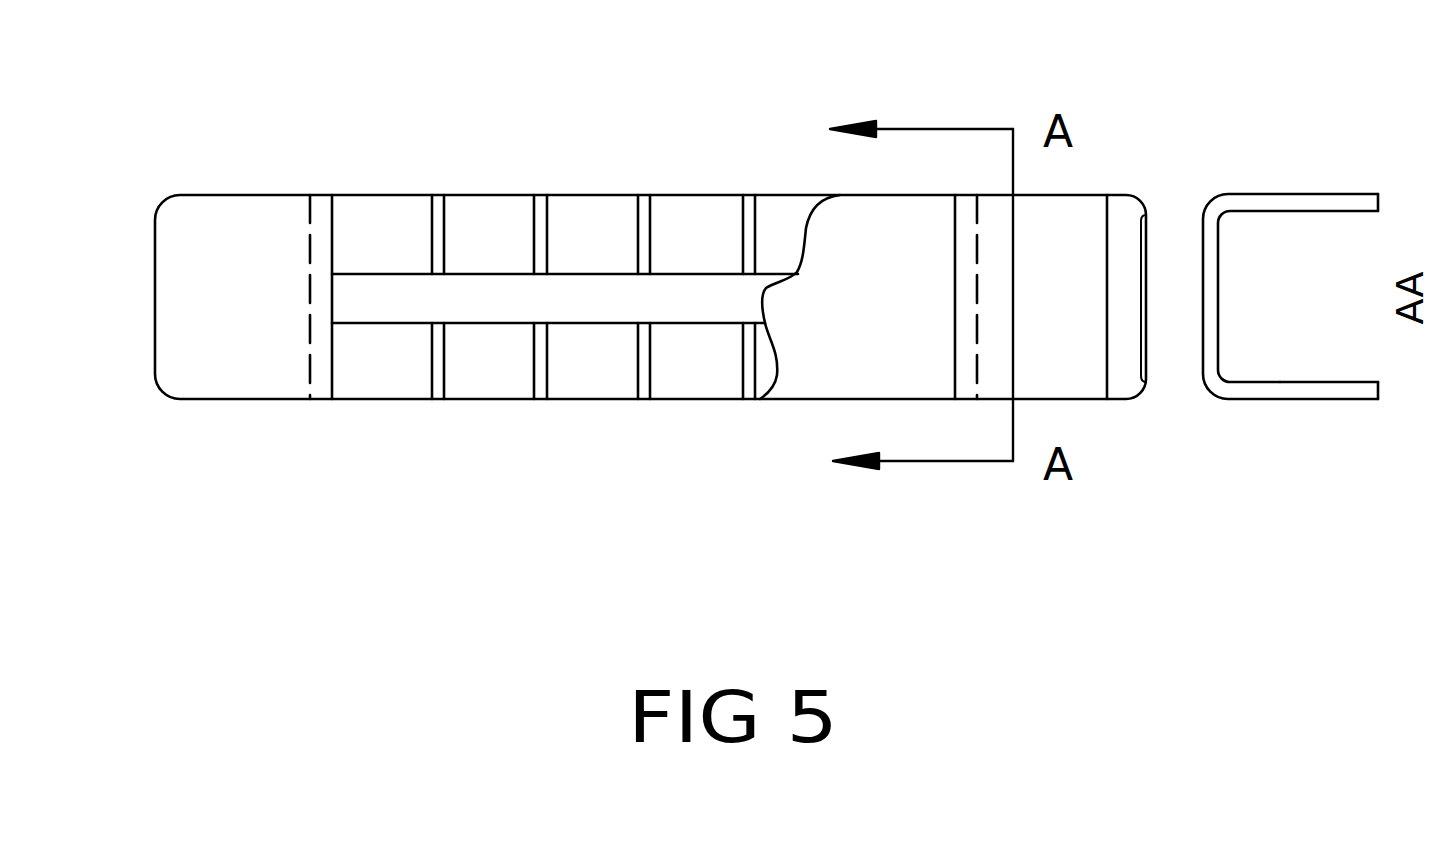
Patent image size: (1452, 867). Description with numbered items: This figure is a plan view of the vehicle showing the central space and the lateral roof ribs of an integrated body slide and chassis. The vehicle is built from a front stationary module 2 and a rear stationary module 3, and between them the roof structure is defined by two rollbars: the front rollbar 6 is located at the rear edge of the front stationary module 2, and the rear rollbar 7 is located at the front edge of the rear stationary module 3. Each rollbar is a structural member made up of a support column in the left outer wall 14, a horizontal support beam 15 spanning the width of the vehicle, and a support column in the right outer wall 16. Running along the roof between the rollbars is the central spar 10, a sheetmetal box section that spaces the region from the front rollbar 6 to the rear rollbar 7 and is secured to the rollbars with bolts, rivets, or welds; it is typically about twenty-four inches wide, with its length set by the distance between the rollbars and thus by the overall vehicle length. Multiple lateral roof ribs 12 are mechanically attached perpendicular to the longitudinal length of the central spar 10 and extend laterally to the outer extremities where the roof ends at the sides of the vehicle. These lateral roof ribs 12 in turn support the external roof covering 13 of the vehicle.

The front stationary module 2 is at (1092, 220).
The rear stationary module 3 is at (177, 227).
The front rollbar 6 is at (962, 388).
The rear rollbar 7 is at (323, 388).
The central spar 10 is at (393, 292).
The lateral roof ribs 12 is at (545, 208).
The external roof covering 13 is at (802, 375).
The left outer wall 14 is at (1328, 198).
The horizontal support beam 15 is at (1210, 303).
The right outer wall 16 is at (1280, 387).